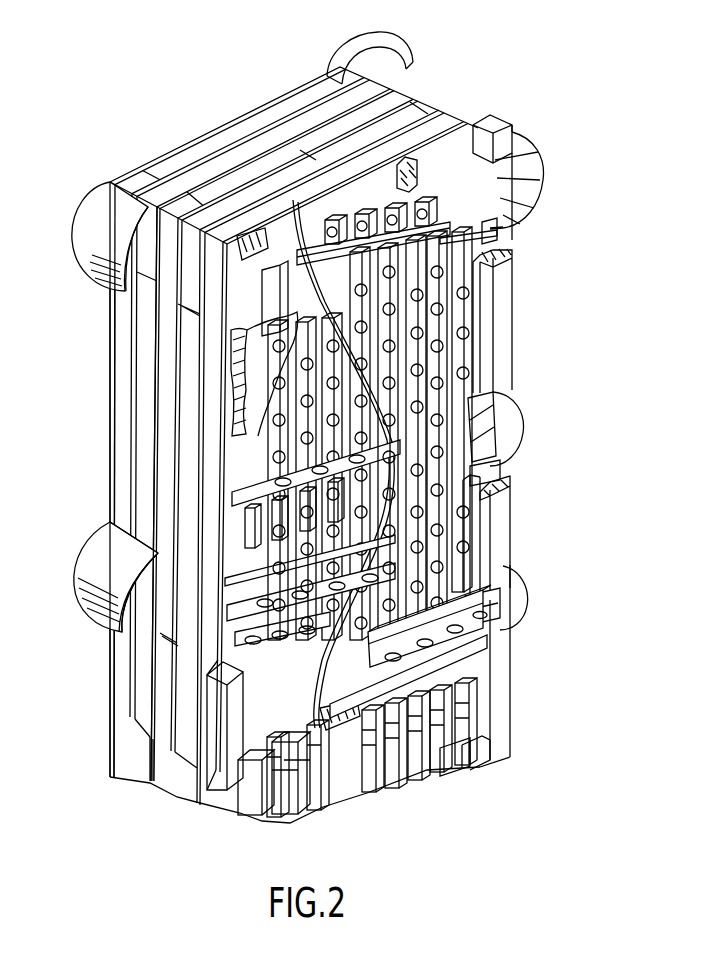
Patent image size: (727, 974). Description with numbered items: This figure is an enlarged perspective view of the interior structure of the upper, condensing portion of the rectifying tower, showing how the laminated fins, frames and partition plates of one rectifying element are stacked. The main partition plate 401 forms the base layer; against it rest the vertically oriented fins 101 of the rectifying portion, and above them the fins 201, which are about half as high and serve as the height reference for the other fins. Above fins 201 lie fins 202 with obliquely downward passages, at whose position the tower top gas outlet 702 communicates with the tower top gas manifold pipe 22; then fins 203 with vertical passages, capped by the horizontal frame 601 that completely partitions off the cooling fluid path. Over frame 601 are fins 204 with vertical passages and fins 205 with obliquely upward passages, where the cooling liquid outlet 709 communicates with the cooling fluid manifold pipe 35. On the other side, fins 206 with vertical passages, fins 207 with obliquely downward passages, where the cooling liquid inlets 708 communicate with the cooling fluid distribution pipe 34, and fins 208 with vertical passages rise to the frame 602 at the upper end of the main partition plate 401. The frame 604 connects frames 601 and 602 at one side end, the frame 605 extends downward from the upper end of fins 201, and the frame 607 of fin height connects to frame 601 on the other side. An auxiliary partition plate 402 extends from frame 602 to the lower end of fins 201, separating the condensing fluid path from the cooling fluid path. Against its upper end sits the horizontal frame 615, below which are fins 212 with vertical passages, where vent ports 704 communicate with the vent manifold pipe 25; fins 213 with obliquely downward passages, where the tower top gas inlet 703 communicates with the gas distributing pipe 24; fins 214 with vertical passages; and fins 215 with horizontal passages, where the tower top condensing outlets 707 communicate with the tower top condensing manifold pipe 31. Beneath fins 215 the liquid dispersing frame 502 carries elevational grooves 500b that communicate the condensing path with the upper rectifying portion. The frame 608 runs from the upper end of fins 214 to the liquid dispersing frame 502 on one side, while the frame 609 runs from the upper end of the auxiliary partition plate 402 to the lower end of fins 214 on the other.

The vent manifold pipe 25 is at (380, 45).
The vent ports 704 is at (456, 87).
The frame 602 is at (280, 158).
The horizontal frame 615 is at (205, 160).
The gas distributing pipe 24 is at (100, 192).
The cooling fluid distribution pipe 34 is at (540, 160).
The cooling liquid inlets 708 is at (503, 176).
The fins 212 is at (450, 207).
The fins 213 is at (486, 243).
The fins 214 is at (509, 292).
The fins 208 is at (300, 272).
The tower top gas inlet 703 is at (169, 312).
The fins 207 is at (295, 313).
The fins 206 is at (278, 428).
The frame 604 is at (122, 427).
The fins 205 is at (242, 488).
The fins 204 is at (245, 528).
The tower top gas manifold pipe 22 is at (93, 540).
The frame 601 is at (158, 560).
The cooling fluid manifold pipe 35 is at (517, 393).
The cooling liquid outlet 709 is at (489, 423).
The fins 203 is at (387, 547).
The frame 609 is at (508, 546).
The tower top condensing manifold pipe 31 is at (521, 588).
The tower top condensing outlets 707 is at (506, 612).
The fins 215 is at (482, 633).
The grooves 500b is at (492, 665).
The liquid dispersing frame 502 is at (478, 667).
The frame 607 is at (508, 725).
The fins 101 is at (472, 757).
The fins 201 is at (302, 733).
The fins 202 is at (258, 640).
The frame 605 is at (140, 783).
The main partition plate 401 is at (110, 756).
The auxiliary partition plate 402 is at (128, 714).
The frame 608 is at (144, 687).
The tower top gas outlet 702 is at (150, 638).